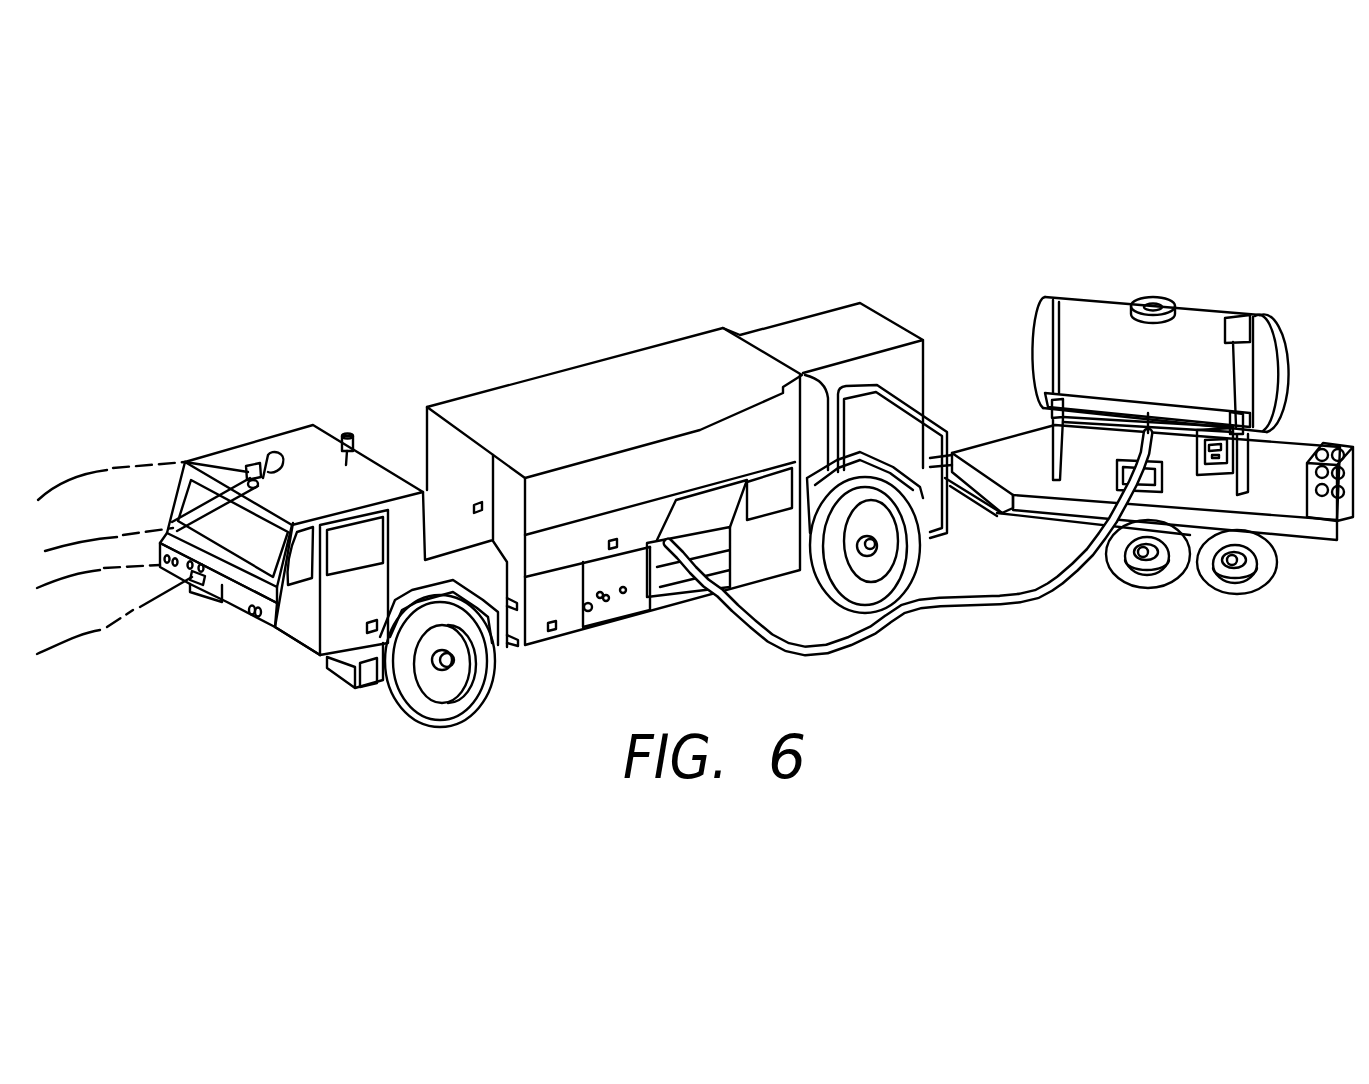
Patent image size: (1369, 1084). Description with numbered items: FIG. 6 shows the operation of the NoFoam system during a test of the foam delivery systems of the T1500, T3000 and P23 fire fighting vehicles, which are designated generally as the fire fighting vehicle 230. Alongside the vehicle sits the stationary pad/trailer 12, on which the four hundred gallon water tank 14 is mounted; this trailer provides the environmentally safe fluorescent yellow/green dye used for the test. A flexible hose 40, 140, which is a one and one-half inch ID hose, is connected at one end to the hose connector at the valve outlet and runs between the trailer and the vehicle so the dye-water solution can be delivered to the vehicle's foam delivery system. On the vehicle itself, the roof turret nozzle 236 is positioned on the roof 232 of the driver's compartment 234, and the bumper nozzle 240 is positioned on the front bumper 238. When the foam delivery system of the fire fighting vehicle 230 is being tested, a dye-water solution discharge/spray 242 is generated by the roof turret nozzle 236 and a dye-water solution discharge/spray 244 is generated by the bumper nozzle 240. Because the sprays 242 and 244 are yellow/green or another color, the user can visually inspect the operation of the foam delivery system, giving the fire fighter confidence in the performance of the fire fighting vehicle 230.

The stationary pad/trailer 12 is at (1152, 394).
The water tank 14 is at (1098, 330).
The flexible hose 40 is at (908, 542).
The flexible hose 140 is at (1053, 600).
The fire fighting vehicle 230 is at (518, 489).
The roof 232 is at (286, 497).
The driver's compartment 234 is at (297, 615).
The roof turret nozzle 236 is at (258, 468).
The front bumper 238 is at (232, 601).
The bumper nozzle 240 is at (192, 580).
The dye-water solution discharge/spray 242 is at (92, 476).
The dye-water solution discharge/spray 244 is at (97, 636).